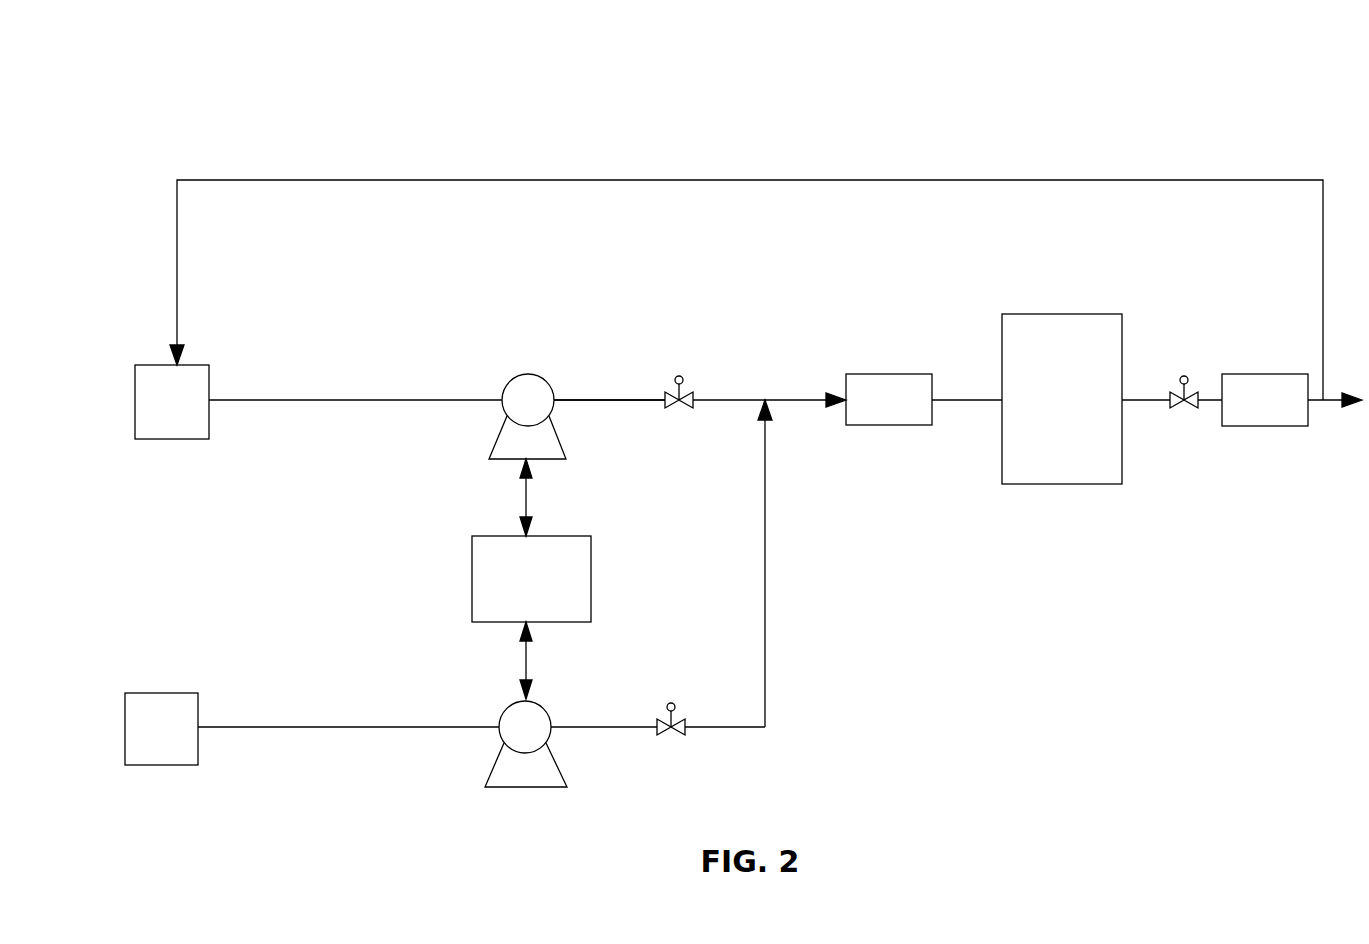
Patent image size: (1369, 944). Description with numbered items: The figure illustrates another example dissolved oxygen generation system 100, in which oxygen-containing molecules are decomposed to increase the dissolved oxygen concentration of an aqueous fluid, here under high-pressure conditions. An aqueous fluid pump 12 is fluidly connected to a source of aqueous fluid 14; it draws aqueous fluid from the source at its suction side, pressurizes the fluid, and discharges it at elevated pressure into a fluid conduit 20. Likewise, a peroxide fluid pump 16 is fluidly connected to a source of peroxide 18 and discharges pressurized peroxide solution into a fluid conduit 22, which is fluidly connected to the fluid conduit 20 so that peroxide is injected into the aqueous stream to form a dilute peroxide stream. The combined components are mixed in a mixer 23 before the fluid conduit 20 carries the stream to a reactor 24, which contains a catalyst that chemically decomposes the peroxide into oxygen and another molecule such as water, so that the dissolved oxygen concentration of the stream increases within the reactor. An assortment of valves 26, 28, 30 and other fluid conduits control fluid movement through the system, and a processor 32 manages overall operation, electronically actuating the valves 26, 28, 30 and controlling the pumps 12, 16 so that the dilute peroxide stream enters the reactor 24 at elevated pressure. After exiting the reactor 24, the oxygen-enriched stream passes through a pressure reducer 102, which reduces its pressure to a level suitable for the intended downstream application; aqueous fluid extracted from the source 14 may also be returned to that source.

The dissolved oxygen generation system 100 is at (1316, 80).
The source of aqueous fluid 14 is at (159, 411).
The source of peroxide 18 is at (149, 739).
The aqueous fluid pump 12 is at (520, 407).
The peroxide fluid pump 16 is at (517, 734).
The fluid conduit 20 is at (584, 401).
The fluid conduit 22 is at (767, 565).
The mixer 23 is at (876, 411).
The reactor 24 is at (1049, 411).
The pressure reducer 102 is at (1246, 411).
The valve 26 is at (680, 411).
The valve 28 is at (671, 738).
The valve 30 is at (1184, 411).
The processor 32 is at (518, 590).